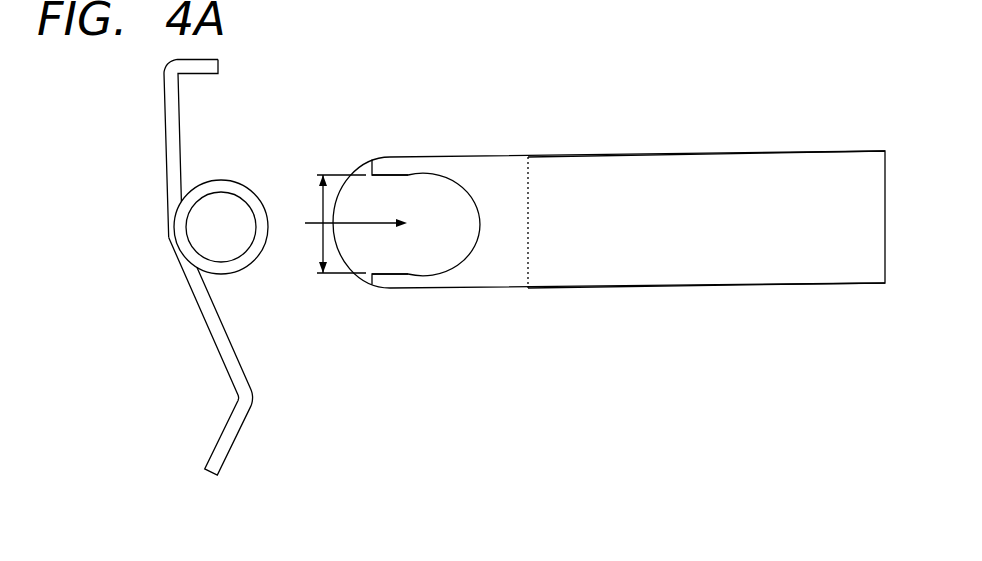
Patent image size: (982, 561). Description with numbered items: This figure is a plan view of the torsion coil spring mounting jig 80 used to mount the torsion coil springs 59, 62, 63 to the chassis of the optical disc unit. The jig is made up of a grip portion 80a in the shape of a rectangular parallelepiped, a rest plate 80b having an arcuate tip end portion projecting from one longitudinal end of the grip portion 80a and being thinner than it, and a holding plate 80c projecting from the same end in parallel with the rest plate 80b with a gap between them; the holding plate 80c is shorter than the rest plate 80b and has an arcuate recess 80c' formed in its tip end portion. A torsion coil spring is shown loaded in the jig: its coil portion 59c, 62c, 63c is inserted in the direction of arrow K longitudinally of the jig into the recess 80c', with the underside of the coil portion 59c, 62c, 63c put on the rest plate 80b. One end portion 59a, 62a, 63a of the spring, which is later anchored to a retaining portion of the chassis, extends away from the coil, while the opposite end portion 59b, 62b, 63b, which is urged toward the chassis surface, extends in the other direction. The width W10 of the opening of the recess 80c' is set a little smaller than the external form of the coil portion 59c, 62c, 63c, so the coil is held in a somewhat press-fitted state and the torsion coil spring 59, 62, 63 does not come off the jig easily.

The torsion coil spring 59 is at (287, 268).
The torsion coil spring 62 is at (287, 268).
The torsion coil spring 63 is at (287, 268).
The one end portion 59a is at (248, 149).
The one end portion 62a is at (248, 149).
The one end portion 63a is at (172, 74).
The opposite end portion 59b is at (289, 357).
The opposite end portion 62b is at (289, 357).
The opposite end portion 63b is at (228, 443).
The coil portion 59c is at (272, 197).
The coil portion 62c is at (272, 197).
The coil portion 63c is at (232, 184).
The torsion coil spring mounting jig 80 is at (606, 245).
The grip portion 80a is at (657, 177).
The rest plate 80b is at (358, 255).
The holding plate 80c is at (432, 139).
The arcuate recess 80c' is at (424, 307).
The width of the opening of the recess W10 is at (323, 240).
The arrow K is at (365, 223).